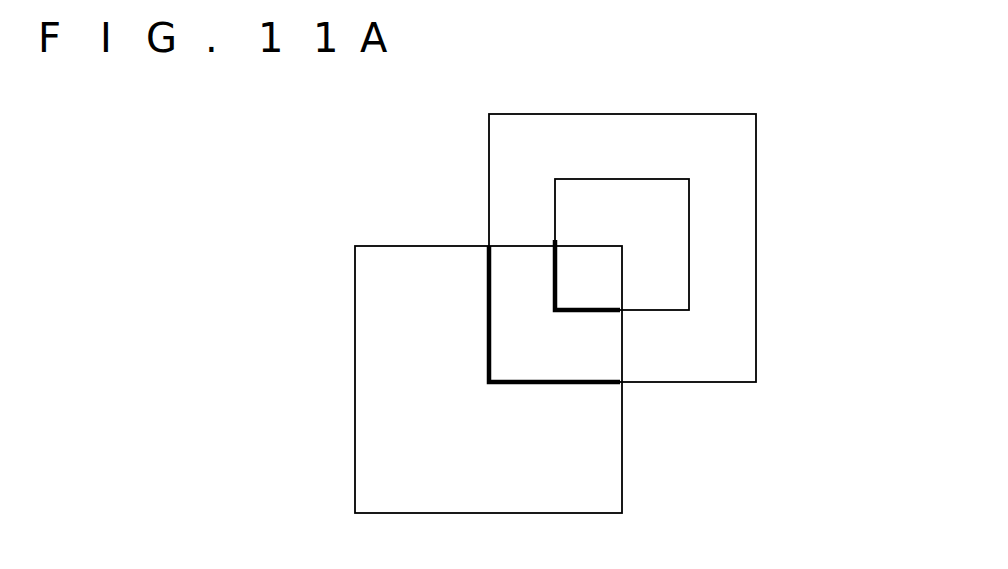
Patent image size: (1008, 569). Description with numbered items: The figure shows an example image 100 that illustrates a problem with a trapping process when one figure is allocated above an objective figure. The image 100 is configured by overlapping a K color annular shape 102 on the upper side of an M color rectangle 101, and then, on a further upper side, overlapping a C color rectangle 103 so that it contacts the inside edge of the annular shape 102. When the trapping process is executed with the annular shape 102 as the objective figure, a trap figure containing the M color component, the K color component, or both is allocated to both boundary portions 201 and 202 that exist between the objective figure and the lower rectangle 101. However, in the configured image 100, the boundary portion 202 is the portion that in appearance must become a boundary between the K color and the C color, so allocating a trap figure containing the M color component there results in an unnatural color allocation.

The image 100 is at (619, 313).
The M color rectangle 101 is at (597, 490).
The K color annular shape 102 is at (720, 153).
The C color rectangle 103 is at (670, 216).
The boundary portion 201 is at (489, 300).
The boundary portion 202 is at (603, 313).